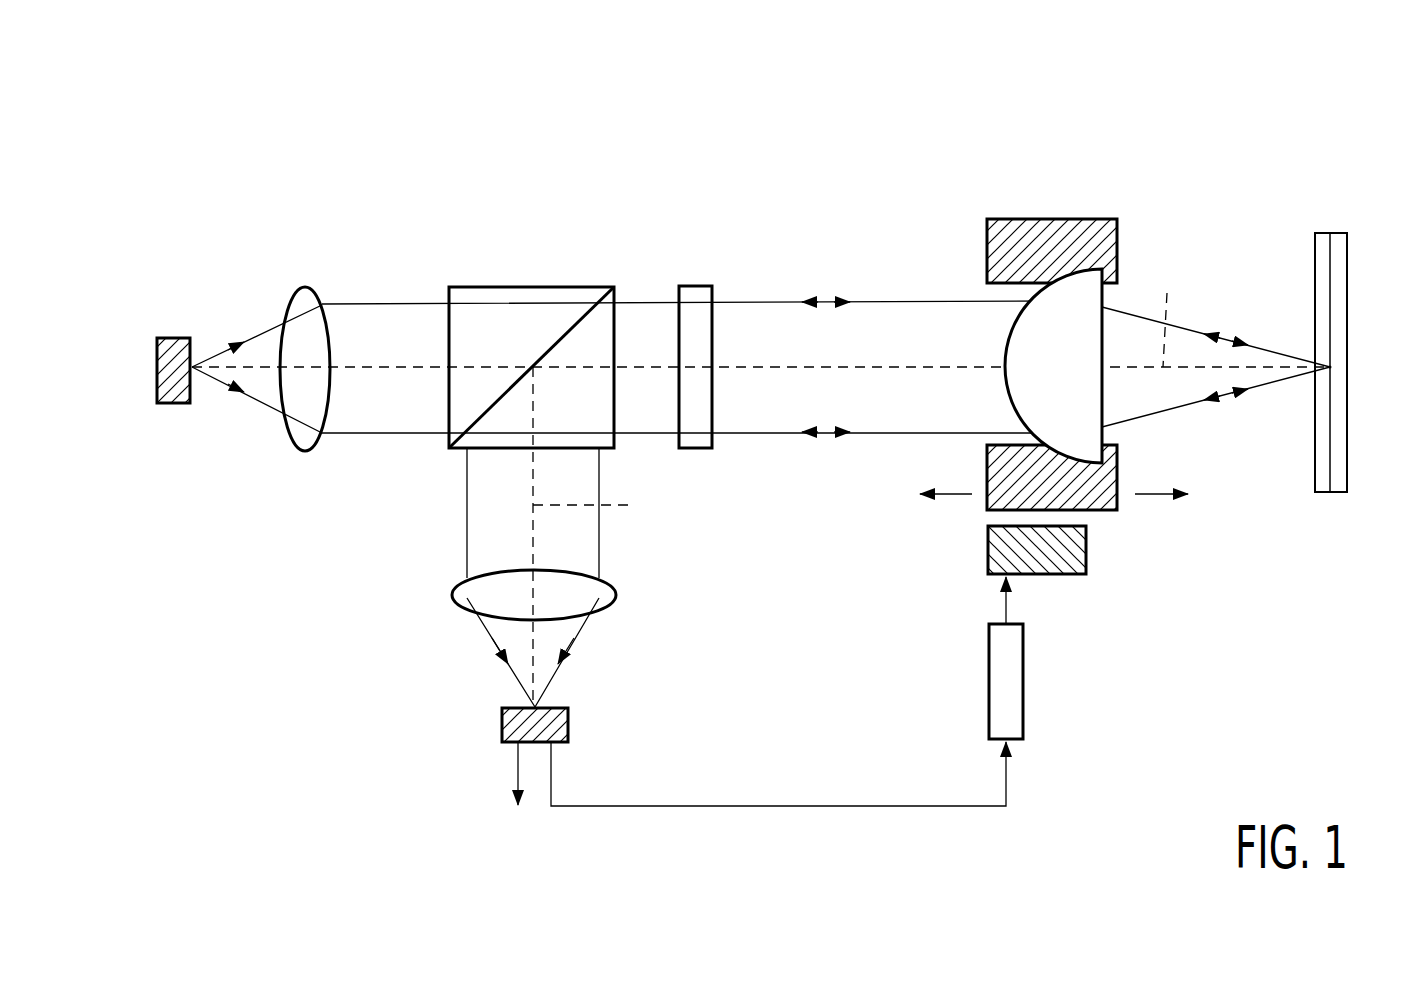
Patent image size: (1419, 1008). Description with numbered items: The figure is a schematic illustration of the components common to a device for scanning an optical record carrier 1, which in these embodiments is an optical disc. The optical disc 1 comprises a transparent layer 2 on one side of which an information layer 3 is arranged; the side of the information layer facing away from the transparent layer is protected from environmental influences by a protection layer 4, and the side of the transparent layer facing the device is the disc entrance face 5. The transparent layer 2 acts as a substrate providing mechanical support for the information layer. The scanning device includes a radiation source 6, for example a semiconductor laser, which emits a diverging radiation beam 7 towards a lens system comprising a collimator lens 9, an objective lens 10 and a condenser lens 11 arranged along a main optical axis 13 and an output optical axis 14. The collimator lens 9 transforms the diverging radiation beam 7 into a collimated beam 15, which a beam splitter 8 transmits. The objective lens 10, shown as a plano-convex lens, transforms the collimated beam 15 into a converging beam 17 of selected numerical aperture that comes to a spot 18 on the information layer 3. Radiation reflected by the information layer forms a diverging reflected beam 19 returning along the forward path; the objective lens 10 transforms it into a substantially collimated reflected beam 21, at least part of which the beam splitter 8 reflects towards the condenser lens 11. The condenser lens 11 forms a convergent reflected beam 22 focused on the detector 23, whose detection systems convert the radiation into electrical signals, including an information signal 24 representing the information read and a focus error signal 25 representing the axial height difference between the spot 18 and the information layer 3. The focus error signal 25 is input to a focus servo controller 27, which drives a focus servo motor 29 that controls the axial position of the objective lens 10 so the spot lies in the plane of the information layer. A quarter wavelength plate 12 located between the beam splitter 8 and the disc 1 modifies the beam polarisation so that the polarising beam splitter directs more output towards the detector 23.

The optical record carrier 1 is at (1370, 212).
The transparent layer 2 is at (1327, 297).
The information layer 3 is at (1330, 257).
The protection layer 4 is at (1342, 332).
The disc entrance face 5 is at (1313, 244).
The radiation source 6 is at (178, 338).
The diverging radiation beam 7 is at (243, 337).
The beam splitter 8 is at (530, 287).
The collimator lens 9 is at (305, 287).
The objective lens 10 is at (1058, 218).
The condenser lens 11 is at (452, 595).
The quarter wavelength plate 12 is at (695, 286).
The main optical axis 13 is at (1167, 313).
The output optical axis 14 is at (595, 537).
The collimated beam 15 is at (845, 300).
The converging beam 17 is at (1244, 332).
The spot 18 is at (1330, 363).
The diverging reflected beam 19 is at (1208, 394).
The collimated reflected beam 21 is at (805, 434).
The convergent reflected beam 22 is at (505, 663).
The detector 23 is at (502, 727).
The information signal 24 is at (515, 778).
The focus error signal 25 is at (738, 807).
The focus servo controller 27 is at (1024, 683).
The focus servo motor 29 is at (1088, 558).